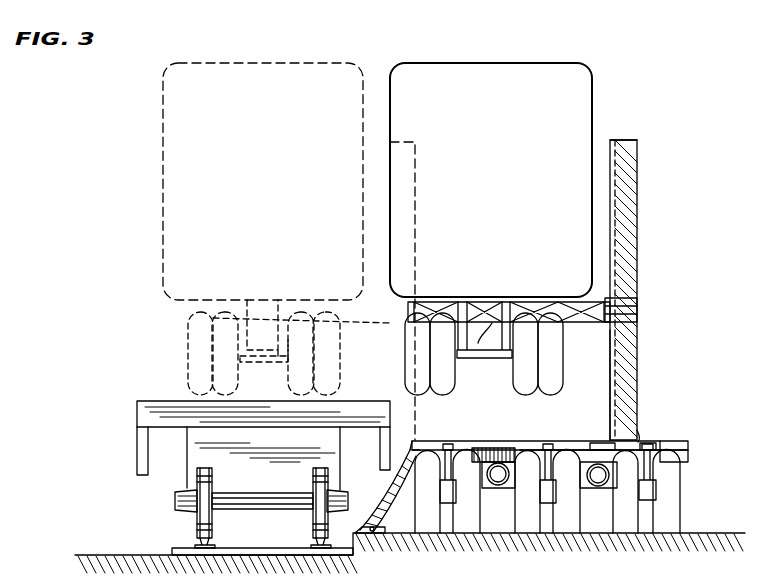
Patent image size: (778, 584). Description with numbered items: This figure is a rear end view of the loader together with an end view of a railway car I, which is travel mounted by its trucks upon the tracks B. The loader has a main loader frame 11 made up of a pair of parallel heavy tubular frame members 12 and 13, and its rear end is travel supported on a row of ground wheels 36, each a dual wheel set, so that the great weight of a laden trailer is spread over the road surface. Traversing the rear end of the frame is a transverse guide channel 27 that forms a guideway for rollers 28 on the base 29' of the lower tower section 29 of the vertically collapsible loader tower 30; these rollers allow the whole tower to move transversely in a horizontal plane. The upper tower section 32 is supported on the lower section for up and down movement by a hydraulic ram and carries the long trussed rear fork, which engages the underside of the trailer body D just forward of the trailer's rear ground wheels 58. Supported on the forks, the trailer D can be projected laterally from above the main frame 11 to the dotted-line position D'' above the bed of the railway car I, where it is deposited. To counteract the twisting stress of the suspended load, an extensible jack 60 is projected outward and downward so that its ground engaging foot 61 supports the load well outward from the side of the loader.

The main loader frame 11 is at (610, 486).
The tubular frame member 12 is at (498, 485).
The tubular frame member 13 is at (638, 440).
The transverse guide channel 27 is at (688, 443).
The rollers 28 is at (600, 443).
The lower tower section 29 is at (644, 385).
The tower base 29' is at (678, 423).
The vertically collapsible loader tower 30 is at (643, 250).
The upper tower section 32 is at (637, 155).
The ground wheels 36 is at (682, 512).
The trailer rear ground wheels 58 is at (515, 385).
The extensible jack 60 is at (400, 490).
The ground engaging foot 61 is at (386, 510).
The tracks B is at (196, 546).
The trailer body D is at (491, 237).
The trailer body in projected position D'' is at (253, 229).
The railway car I is at (142, 403).